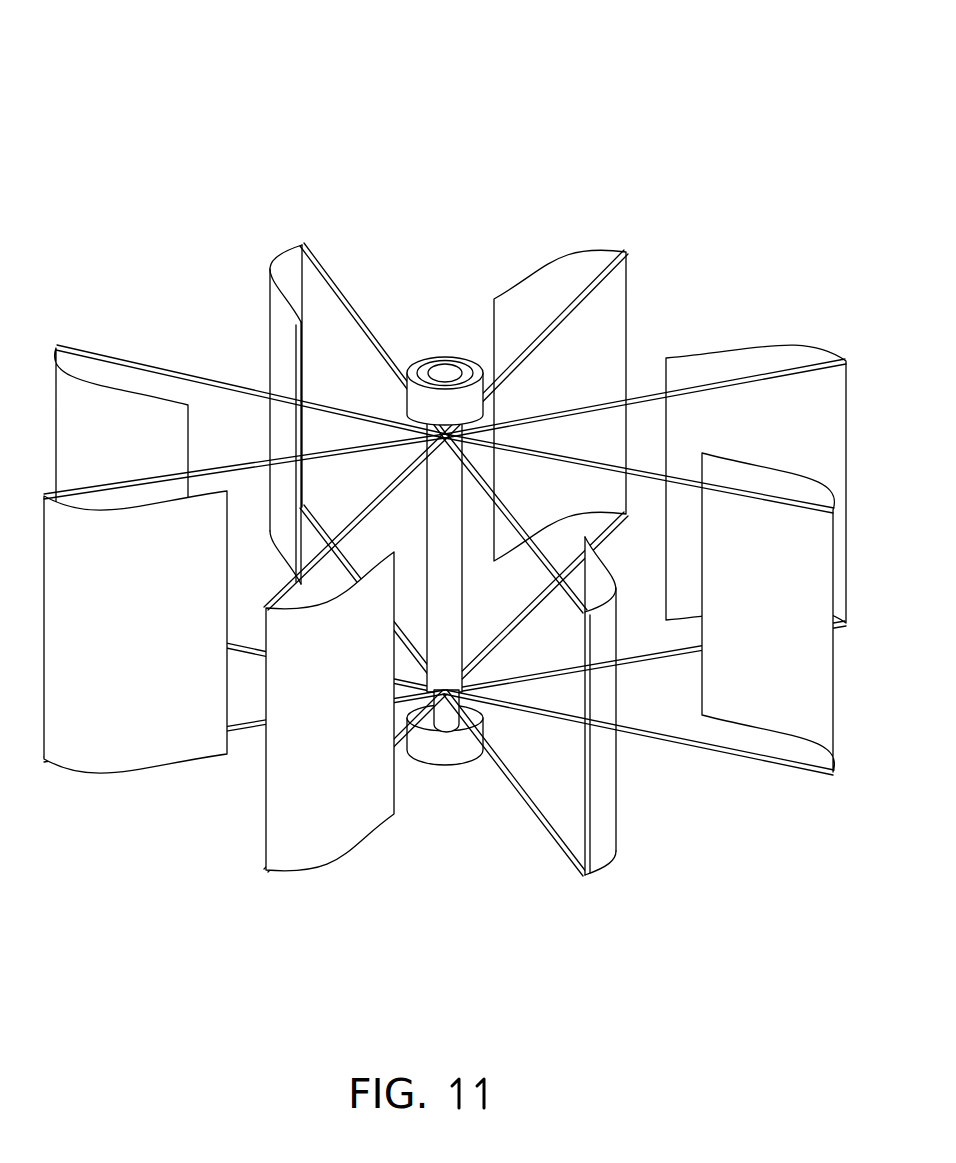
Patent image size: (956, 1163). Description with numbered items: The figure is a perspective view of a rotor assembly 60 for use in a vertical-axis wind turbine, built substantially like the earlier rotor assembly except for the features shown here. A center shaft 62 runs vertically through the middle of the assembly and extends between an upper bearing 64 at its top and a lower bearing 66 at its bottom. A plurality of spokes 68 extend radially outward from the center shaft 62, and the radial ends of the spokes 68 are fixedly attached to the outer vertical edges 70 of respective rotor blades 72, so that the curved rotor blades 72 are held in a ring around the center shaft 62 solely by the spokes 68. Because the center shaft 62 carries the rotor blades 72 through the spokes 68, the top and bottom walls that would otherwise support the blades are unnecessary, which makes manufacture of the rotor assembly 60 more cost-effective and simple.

The rotor assembly 60 is at (449, 140).
The center shaft 62 is at (452, 643).
The upper bearing 64 is at (420, 403).
The lower bearing 66 is at (447, 752).
The spokes 68 is at (355, 308).
The outer vertical edges 70 is at (628, 297).
The rotor blades 72 is at (567, 363).